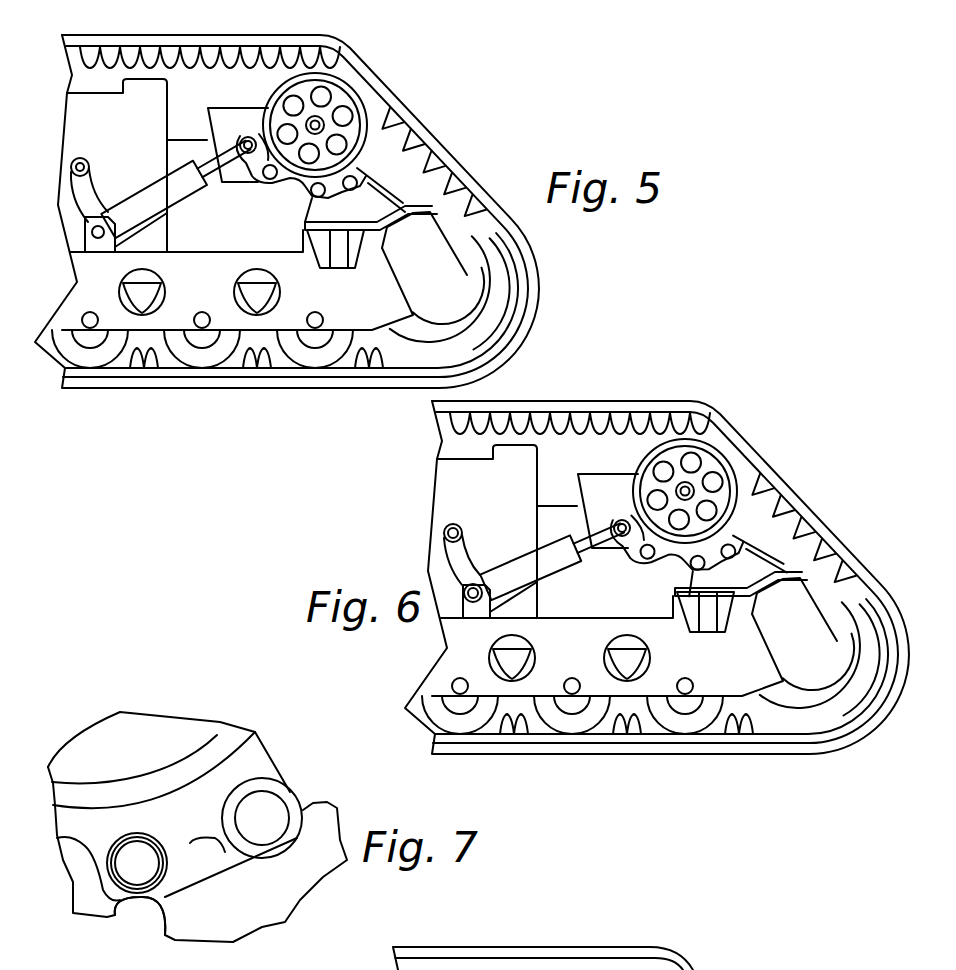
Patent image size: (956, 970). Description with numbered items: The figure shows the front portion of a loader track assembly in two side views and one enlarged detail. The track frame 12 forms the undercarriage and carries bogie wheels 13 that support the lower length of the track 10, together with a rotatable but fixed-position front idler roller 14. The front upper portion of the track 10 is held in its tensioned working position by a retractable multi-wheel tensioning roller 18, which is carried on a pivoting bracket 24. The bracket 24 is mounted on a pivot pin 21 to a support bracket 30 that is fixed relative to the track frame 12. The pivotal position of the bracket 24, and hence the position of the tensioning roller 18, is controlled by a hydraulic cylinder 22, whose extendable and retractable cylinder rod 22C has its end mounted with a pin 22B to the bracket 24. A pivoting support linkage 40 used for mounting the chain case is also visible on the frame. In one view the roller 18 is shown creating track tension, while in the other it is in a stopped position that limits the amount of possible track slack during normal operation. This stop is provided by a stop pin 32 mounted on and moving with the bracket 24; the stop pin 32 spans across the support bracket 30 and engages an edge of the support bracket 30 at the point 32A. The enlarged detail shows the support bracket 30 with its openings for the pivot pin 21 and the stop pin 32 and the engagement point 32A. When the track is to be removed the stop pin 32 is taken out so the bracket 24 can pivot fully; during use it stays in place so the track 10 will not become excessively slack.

In FIG. 5, the track 10 is at (437, 153).
In FIG. 5, the track frame 12 is at (180, 278).
In FIG. 6, the track frame 12 is at (580, 627).
In FIG. 5, the bogie wheels 13 is at (182, 352).
In FIG. 6, the bogie wheels 13 is at (573, 725).
In FIG. 5, the front idler roller 14 is at (467, 237).
In FIG. 5, the tensioning roller 18 is at (352, 88).
In FIG. 6, the tensioning roller 18 is at (646, 472).
In FIG. 5, the pivot pin 21 is at (406, 168).
In FIG. 6, the pivot pin 21 is at (750, 563).
In FIG. 7, the pivot pin 21 is at (263, 812).
In FIG. 5, the hydraulic cylinder 22 is at (167, 193).
In FIG. 6, the hydraulic cylinder 22 is at (532, 565).
In FIG. 5, the pin 22B is at (257, 180).
In FIG. 6, the pin 22B is at (635, 548).
In FIG. 5, the cylinder rod 22C is at (212, 155).
In FIG. 5, the bracket 24 is at (258, 135).
In FIG. 6, the bracket 24 is at (665, 568).
In FIG. 6, the support bracket 30 is at (807, 507).
In FIG. 7, the support bracket 30 is at (240, 903).
In FIG. 5, the stop pin 32 is at (302, 202).
In FIG. 7, the stop pin 32 is at (140, 857).
In FIG. 6, the point 32A is at (711, 600).
In FIG. 7, the point 32A is at (163, 932).
In FIG. 5, the pivoting support linkage 40 is at (92, 186).
In FIG. 6, the pivoting support linkage 40 is at (463, 557).